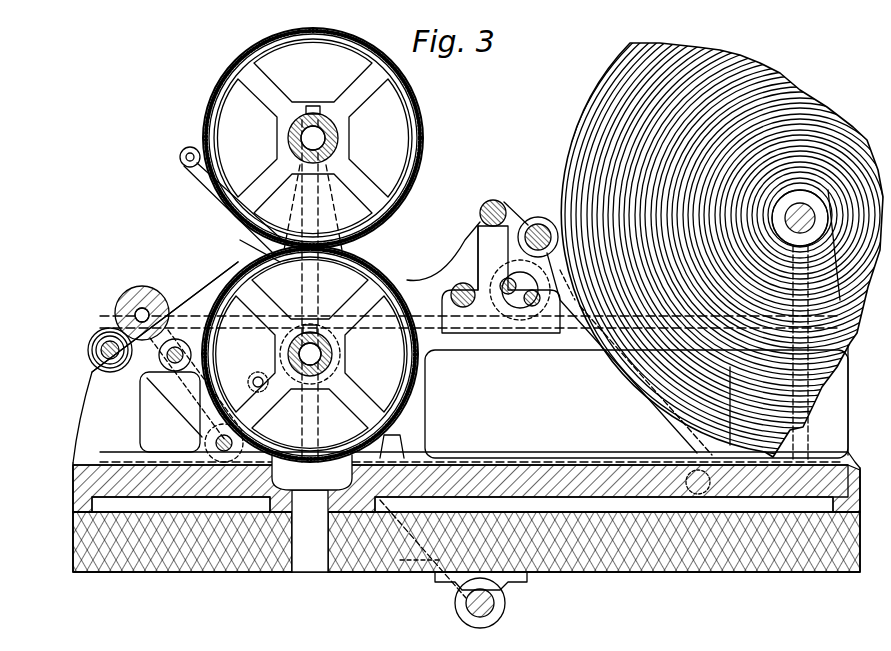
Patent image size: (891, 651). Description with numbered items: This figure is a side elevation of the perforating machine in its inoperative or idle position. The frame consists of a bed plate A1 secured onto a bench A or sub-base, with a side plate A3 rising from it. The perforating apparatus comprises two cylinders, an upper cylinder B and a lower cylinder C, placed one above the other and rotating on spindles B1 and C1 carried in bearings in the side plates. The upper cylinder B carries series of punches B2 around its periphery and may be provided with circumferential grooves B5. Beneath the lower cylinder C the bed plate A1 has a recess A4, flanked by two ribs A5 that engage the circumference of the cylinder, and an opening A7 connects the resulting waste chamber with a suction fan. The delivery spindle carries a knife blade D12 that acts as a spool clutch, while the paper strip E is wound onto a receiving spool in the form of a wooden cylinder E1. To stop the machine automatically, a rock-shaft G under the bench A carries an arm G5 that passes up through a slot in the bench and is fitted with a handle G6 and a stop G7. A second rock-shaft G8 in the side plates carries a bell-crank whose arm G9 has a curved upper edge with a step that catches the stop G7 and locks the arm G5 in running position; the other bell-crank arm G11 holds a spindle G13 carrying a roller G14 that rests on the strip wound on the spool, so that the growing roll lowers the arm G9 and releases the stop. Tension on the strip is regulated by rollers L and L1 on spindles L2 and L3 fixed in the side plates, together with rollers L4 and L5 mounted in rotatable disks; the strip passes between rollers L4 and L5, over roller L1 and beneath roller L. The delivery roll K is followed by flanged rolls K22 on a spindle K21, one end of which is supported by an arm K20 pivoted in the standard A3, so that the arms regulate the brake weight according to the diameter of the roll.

The bench A is at (73, 540).
The bed plate A1 is at (73, 470).
The side plate A3 is at (93, 388).
The recess A4 is at (312, 472).
The rib A5 is at (614, 404).
The opening A7 is at (312, 512).
The upper cylinder B is at (400, 75).
The spindle B1 is at (300, 140).
The punches B2 is at (420, 108).
The circumferential grooves B5 is at (215, 105).
The lower cylinder C is at (215, 274).
The spindle C1 is at (333, 352).
The knife blade D12 is at (110, 338).
The paper strip E is at (92, 360).
The wooden cylinder E1 is at (96, 348).
The rock-shaft G is at (498, 600).
The arm G5 is at (425, 582).
The handle G6 is at (245, 238).
The stop G7 is at (245, 380).
The rock-shaft G8 is at (214, 443).
The bell-crank arm G9 is at (332, 368).
The bell-crank arm G11 is at (195, 385).
The spindle G13 is at (128, 300).
The roller G14 is at (142, 306).
The paper roll K is at (830, 222).
The arm K20 is at (648, 418).
The spindle K21 is at (512, 200).
The flanged roll K22 is at (540, 224).
The roller L is at (445, 268).
The roller L1 is at (493, 200).
The spindle L2 is at (482, 212).
The spindle L3 is at (463, 308).
The roller L4 is at (508, 296).
The roller L5 is at (532, 308).